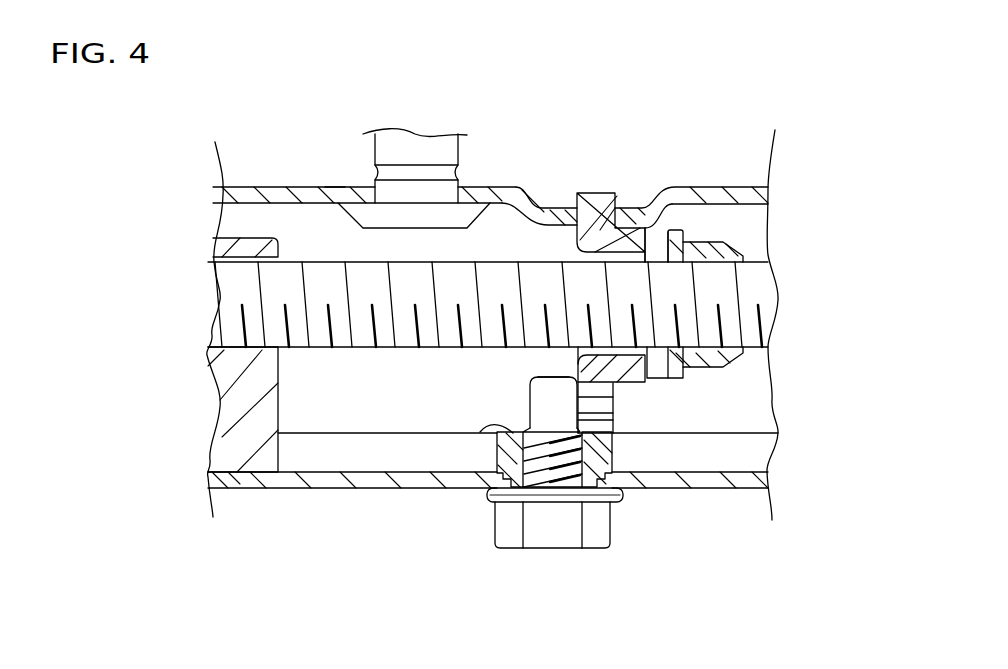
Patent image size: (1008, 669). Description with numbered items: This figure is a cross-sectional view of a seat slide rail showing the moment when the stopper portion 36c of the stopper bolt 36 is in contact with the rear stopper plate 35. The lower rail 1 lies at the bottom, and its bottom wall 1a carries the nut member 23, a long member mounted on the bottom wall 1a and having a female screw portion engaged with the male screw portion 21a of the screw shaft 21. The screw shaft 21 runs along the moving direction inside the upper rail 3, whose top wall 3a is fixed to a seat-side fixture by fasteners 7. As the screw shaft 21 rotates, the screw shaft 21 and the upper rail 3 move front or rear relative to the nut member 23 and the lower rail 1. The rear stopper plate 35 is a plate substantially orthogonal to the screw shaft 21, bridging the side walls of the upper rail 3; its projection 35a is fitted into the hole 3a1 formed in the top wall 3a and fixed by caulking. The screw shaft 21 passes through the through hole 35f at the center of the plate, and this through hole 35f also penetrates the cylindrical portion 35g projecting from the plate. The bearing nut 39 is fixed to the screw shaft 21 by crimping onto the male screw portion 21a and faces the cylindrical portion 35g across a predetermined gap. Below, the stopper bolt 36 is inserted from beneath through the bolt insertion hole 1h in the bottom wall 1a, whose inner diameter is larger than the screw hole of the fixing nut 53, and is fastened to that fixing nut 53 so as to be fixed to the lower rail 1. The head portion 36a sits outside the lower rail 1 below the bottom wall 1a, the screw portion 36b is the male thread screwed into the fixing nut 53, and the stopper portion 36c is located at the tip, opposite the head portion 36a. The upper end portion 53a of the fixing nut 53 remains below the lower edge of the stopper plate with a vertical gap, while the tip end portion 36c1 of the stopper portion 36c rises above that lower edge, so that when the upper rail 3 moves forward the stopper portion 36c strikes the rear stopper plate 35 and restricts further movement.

The lower rail 1 is at (343, 490).
The bottom wall 1a is at (297, 488).
The bolt insertion hole 1h is at (515, 495).
The upper rail 3 is at (275, 187).
The top wall 3a is at (333, 187).
The holes 3a1 is at (602, 208).
The fasteners 7 is at (433, 150).
The screw shaft 21 is at (300, 262).
The male screw portion 21a is at (235, 300).
The nut member 23 is at (236, 409).
The rear stopper plate 35 is at (618, 387).
The projection 35a is at (602, 195).
The through hole 35f is at (683, 252).
The cylindrical portion 35g is at (632, 372).
The stopper bolt 36 is at (567, 553).
The head portion 36a is at (602, 547).
The screw portion 36b is at (617, 473).
The stopper portion 36c is at (538, 402).
The tip end portion 36c1 is at (550, 377).
The bearing nut 39 is at (730, 242).
The fixing nut 53 is at (492, 495).
The upper end portion 53a is at (477, 480).